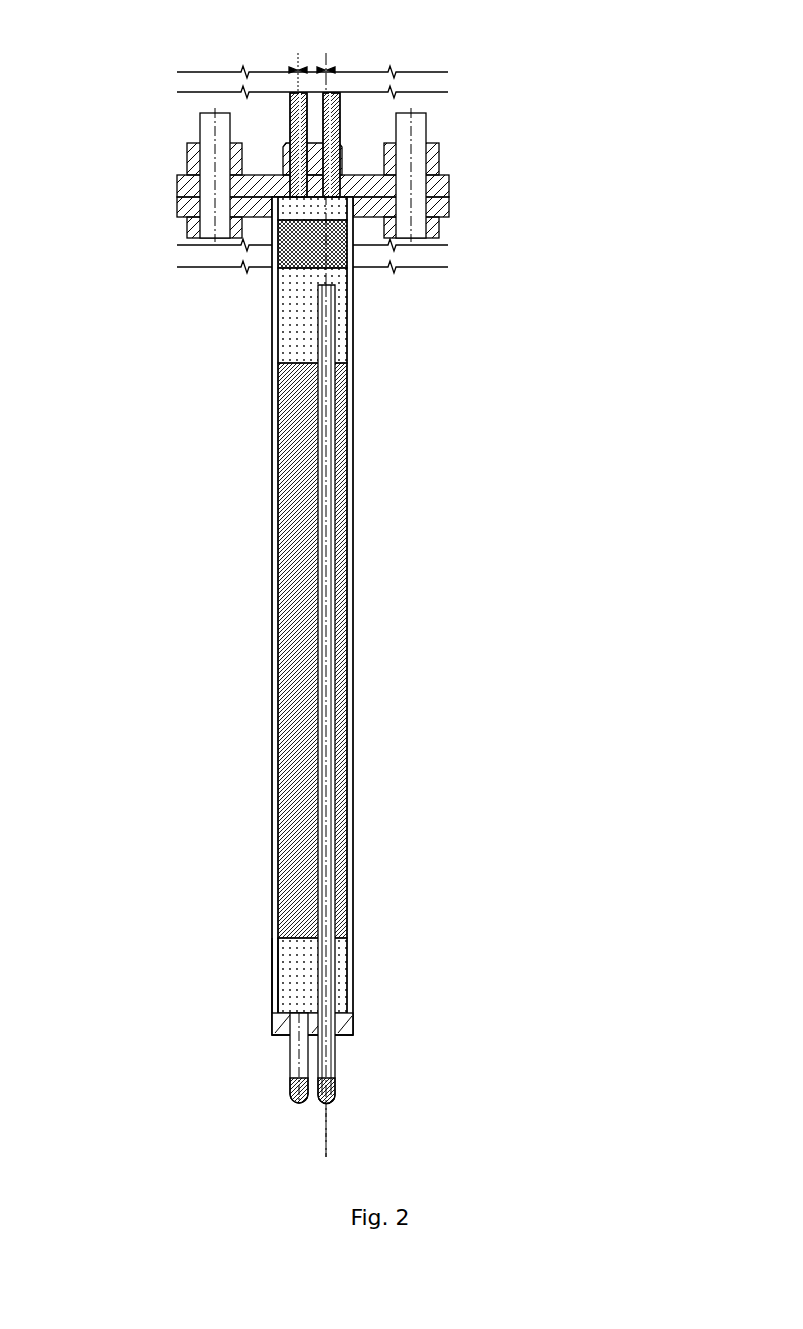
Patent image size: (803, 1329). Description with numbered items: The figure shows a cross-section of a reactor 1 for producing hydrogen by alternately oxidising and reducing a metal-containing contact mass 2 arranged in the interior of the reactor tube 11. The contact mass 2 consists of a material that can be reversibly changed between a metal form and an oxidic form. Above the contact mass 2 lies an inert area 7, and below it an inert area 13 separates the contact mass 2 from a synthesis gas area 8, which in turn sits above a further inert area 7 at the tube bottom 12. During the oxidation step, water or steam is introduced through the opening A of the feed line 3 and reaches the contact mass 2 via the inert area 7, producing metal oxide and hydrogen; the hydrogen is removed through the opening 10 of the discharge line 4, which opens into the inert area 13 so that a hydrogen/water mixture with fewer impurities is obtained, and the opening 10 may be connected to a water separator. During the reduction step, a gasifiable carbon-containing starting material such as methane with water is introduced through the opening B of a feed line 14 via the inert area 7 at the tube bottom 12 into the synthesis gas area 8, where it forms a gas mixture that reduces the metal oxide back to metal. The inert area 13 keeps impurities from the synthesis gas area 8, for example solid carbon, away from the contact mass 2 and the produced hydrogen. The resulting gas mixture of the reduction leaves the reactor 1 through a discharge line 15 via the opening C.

The reactor 1 is at (257, 562).
The metal-containing contact mass 2 is at (358, 225).
The feed line 3 is at (333, 112).
The discharge line 4 is at (317, 1103).
The inert area 7 is at (359, 260).
The synthesis gas area 8 is at (360, 659).
The opening of the discharge line 10 is at (336, 290).
The reactor tube 11 is at (270, 960).
The tube bottom 12 is at (297, 1020).
The inert area 13 is at (359, 340).
The feed line 14 is at (290, 1067).
The discharge line 15 is at (290, 113).
The opening of the feed line A is at (345, 80).
The opening of the feed line B is at (355, 1026).
The opening of the discharge line C is at (285, 79).